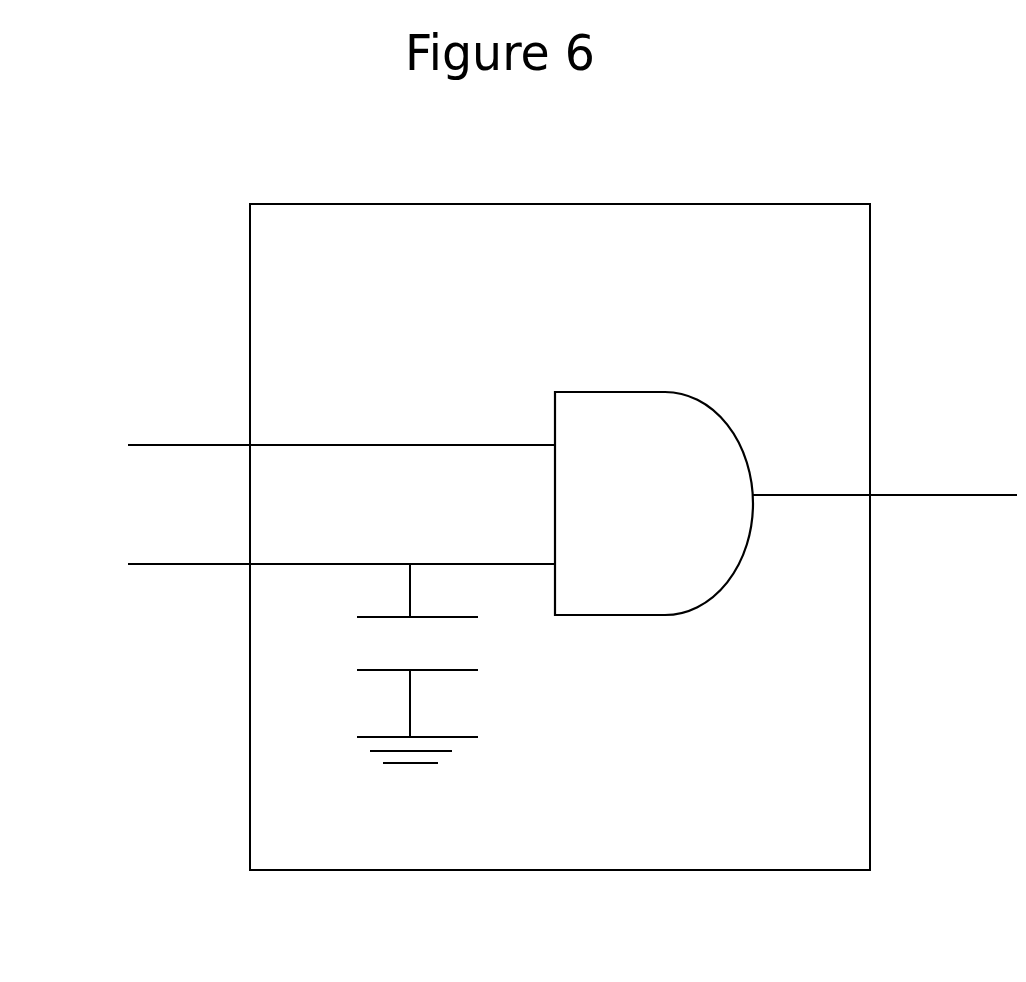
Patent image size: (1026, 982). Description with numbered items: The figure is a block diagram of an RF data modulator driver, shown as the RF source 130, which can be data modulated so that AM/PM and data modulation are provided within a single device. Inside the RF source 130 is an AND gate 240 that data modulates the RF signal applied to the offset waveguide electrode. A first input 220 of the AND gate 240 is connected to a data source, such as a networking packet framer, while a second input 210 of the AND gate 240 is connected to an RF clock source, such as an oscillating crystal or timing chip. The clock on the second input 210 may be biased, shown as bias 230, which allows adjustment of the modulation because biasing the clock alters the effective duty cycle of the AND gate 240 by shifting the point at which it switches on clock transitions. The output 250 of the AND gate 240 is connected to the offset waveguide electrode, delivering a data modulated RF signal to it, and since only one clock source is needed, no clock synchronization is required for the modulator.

The RF source 130 is at (301, 203).
The second input 210 is at (236, 562).
The first input 220 is at (236, 443).
The clock bias 230 is at (346, 644).
The AND gate 240 is at (631, 618).
The output 250 is at (991, 492).